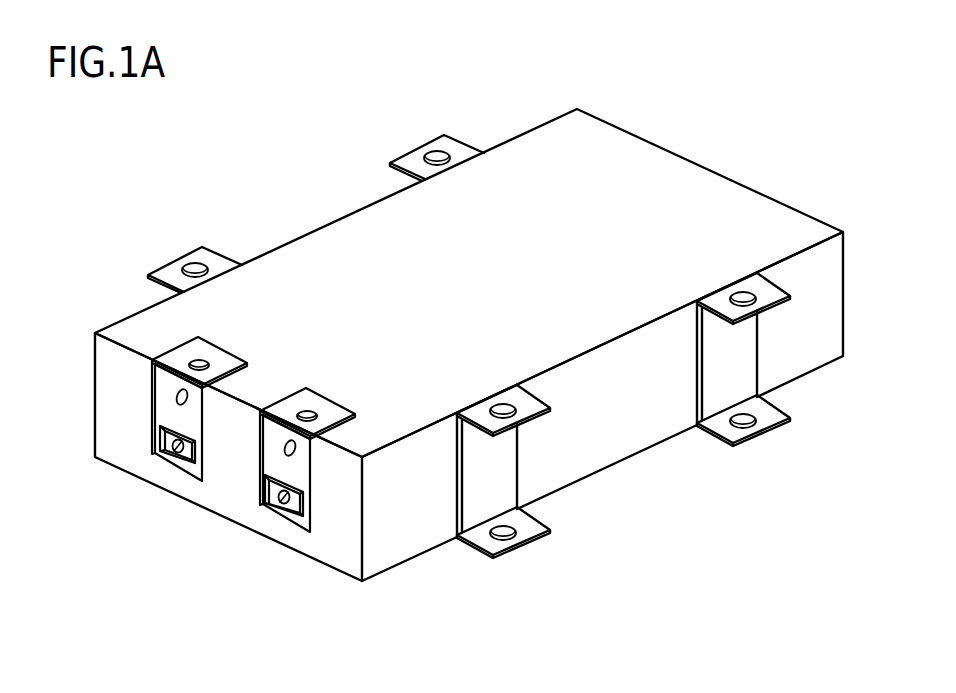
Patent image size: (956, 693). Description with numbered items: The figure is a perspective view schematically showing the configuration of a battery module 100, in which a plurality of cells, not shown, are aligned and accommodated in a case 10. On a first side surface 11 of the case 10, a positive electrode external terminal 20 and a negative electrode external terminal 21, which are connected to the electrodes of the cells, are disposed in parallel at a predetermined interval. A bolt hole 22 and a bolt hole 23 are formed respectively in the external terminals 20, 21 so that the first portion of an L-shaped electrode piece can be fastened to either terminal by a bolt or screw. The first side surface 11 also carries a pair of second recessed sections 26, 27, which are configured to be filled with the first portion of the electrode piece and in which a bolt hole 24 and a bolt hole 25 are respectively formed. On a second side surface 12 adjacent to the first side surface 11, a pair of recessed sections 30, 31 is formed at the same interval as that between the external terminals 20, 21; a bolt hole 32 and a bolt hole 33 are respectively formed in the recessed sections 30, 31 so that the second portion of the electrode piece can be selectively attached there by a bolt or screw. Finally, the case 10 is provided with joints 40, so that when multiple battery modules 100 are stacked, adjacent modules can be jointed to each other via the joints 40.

The battery module 100 is at (660, 82).
The case 10 is at (367, 203).
The first side surface 11 is at (110, 403).
The second side surface 12 is at (148, 327).
The positive electrode external terminal 20 is at (282, 508).
The negative electrode external terminal 21 is at (173, 467).
The bolt hole 22 is at (263, 510).
The bolt hole 23 is at (152, 458).
The bolt hole 24 is at (292, 454).
The bolt hole 25 is at (180, 399).
The second recessed section 26 is at (268, 462).
The second recessed section 27 is at (163, 412).
The recessed section 30 is at (328, 412).
The recessed section 31 is at (222, 363).
The bolt hole 32 is at (305, 410).
The bolt hole 33 is at (200, 358).
The joint 40 is at (505, 463).